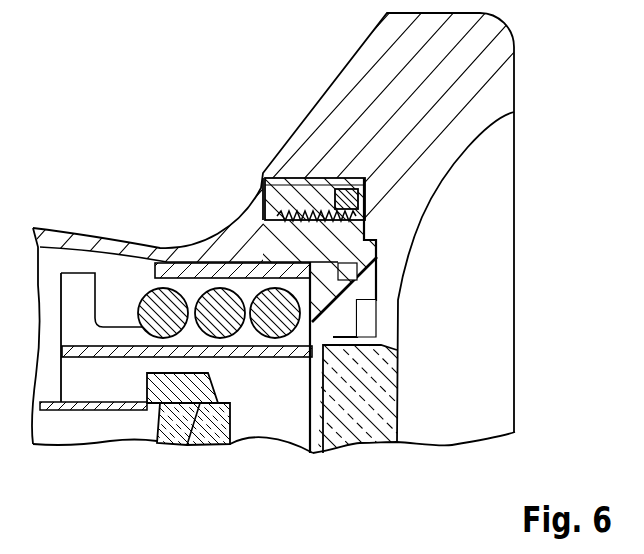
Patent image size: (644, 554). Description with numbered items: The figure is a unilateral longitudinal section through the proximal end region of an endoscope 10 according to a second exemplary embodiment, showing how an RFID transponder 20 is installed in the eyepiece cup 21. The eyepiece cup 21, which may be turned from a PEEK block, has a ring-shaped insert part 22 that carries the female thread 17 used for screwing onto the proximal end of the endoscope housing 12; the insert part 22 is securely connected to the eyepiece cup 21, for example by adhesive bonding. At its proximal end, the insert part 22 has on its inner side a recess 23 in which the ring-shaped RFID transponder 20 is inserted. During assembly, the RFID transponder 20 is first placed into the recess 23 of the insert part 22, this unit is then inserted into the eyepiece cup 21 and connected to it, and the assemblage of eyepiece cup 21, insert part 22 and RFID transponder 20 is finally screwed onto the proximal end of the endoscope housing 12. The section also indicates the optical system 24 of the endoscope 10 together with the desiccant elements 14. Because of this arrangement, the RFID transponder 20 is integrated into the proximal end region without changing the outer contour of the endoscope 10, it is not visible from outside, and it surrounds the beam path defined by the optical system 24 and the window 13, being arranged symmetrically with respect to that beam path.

The endoscope 10 is at (150, 104).
The endoscope housing 12 is at (56, 233).
The window 13 is at (361, 432).
The desiccant elements 14 is at (163, 310).
The female thread 17 is at (300, 210).
The RFID transponder 20 is at (355, 203).
The eyepiece cup 21 is at (480, 80).
The insert part 22 is at (297, 186).
The recess 23 is at (340, 186).
The optical system 24 is at (163, 444).